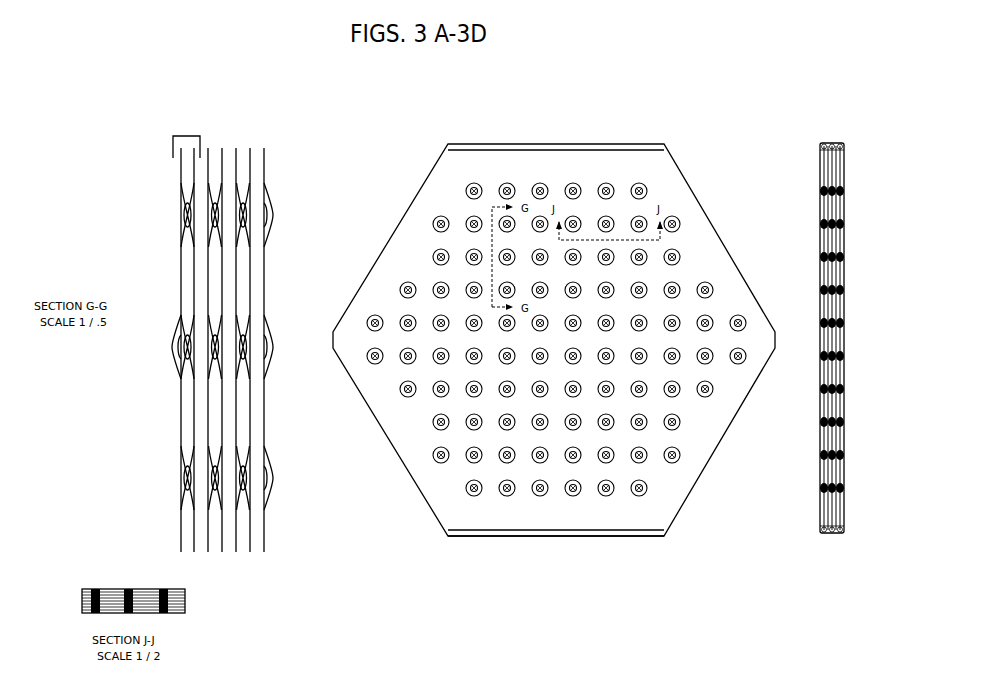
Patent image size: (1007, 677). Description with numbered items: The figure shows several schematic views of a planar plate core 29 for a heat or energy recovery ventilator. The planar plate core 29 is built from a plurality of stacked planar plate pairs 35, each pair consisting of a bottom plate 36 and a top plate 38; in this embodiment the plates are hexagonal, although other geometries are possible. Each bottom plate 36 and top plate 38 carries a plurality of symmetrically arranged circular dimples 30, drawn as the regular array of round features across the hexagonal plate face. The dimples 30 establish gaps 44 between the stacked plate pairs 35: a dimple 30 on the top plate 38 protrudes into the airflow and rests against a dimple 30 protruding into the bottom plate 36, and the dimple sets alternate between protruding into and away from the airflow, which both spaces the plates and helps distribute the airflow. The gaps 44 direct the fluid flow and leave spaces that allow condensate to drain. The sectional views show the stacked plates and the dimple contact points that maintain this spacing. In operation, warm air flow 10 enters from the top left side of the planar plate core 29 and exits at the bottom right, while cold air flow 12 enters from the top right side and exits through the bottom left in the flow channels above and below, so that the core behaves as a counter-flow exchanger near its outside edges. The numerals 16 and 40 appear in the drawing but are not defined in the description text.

In FIG. 3A, the warm air flow 10 is at (716, 230).
In FIG. 3A, the cold air flow 12 is at (394, 234).
In FIG. 3B, the layered strip 16 is at (822, 241).
In FIG. 3A, the planar plate core 29 is at (661, 539).
In FIG. 3C, the circular dimple 30 is at (249, 343).
In FIG. 3C, the stacked planar plate pair 35 is at (174, 136).
In FIG. 3C, the bottom plate 36 is at (236, 148).
In FIG. 3C, the top plate 38 is at (265, 152).
In FIG. 3C, the channels 40 is at (221, 350).
In FIG. 3C, the gap 44 is at (224, 332).